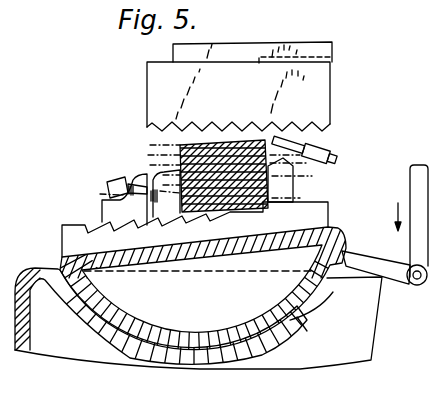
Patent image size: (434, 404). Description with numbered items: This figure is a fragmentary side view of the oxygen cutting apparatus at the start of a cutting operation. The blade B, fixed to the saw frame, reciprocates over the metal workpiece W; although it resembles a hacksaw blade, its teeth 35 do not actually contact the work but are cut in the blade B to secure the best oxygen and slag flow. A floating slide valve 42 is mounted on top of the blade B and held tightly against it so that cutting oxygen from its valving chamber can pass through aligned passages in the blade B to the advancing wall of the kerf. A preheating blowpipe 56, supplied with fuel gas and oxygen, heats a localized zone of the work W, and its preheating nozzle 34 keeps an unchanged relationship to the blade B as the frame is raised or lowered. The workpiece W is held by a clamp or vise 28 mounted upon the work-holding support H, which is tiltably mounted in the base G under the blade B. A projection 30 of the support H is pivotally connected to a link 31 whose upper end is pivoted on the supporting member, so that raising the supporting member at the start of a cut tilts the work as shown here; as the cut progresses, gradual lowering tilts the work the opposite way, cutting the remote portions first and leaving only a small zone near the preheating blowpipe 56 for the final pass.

The floating slide valve 42 is at (254, 47).
The blade B is at (142, 95).
The preheating nozzle 34 is at (282, 140).
The teeth 35 is at (147, 128).
The preheating blowpipe 56 is at (336, 152).
The workpiece W is at (295, 203).
The link 31 is at (411, 183).
The vise 28 is at (68, 241).
The work-holding support H is at (206, 257).
The projection 30 is at (406, 278).
The base G is at (113, 341).